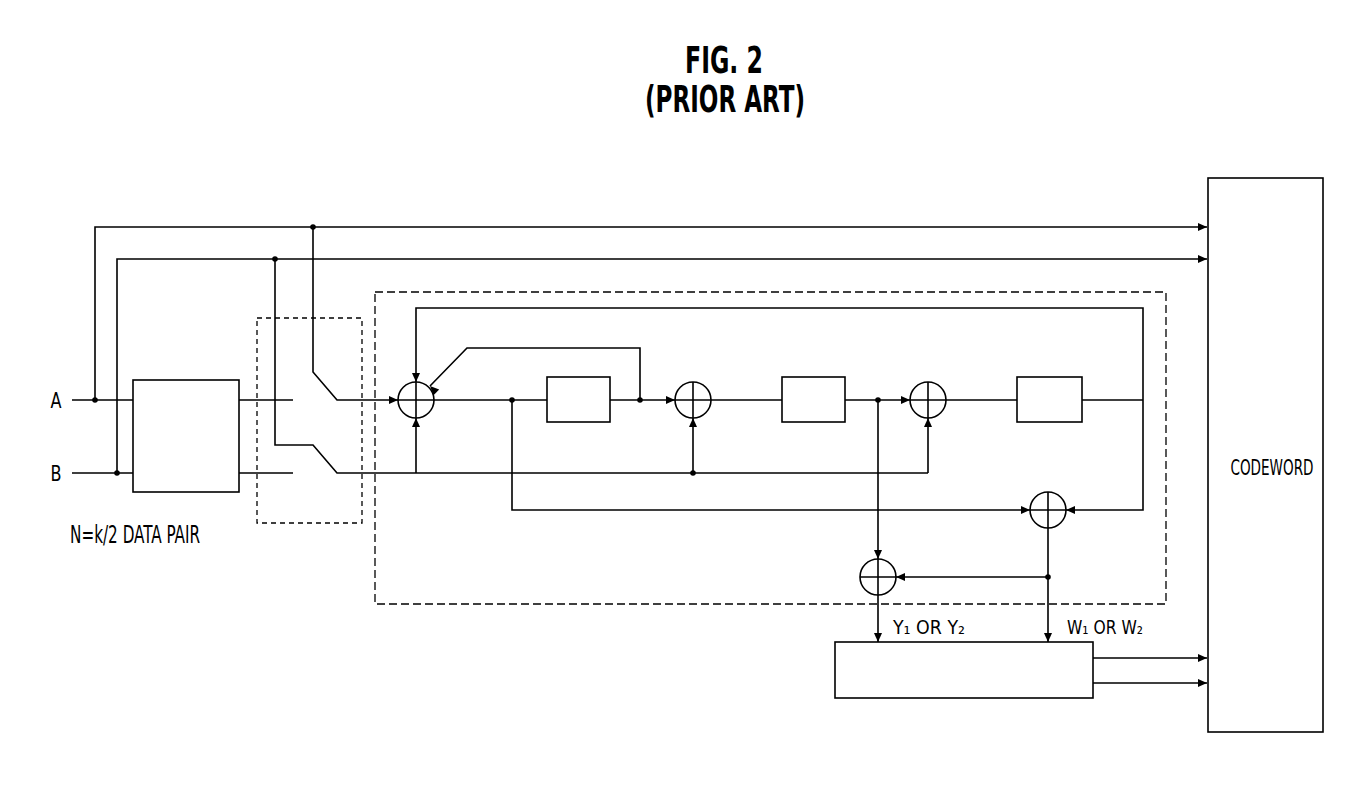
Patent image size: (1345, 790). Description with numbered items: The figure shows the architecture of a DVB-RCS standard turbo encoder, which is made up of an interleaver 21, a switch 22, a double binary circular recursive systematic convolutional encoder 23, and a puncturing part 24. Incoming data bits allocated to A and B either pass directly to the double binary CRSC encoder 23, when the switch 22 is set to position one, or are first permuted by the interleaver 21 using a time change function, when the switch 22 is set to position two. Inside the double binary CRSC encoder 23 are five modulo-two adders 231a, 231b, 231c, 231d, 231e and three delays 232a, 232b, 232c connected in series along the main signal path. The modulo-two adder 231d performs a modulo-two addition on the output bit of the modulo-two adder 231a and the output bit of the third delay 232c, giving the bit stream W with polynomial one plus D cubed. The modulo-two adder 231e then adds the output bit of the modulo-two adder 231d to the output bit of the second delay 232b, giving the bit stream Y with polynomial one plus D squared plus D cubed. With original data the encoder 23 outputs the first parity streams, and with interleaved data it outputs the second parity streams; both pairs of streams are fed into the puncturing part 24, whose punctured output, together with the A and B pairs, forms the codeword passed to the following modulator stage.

The interleaver 21 is at (200, 380).
The switch 22 is at (320, 523).
The double binary circular recursive systematic convolutional (CRSC) encoder 23 is at (1125, 292).
The puncturing part 24 is at (1060, 698).
The modulo-2 adder 231a is at (432, 413).
The modulo-2 adder 231b is at (708, 387).
The modulo-2 adder 231c is at (943, 387).
The modulo-2 adder 231d is at (1063, 497).
The modulo-2 adder 231e is at (893, 564).
The first delay 232a is at (585, 422).
The second delay 232b is at (822, 377).
The third delay 232c is at (1057, 377).